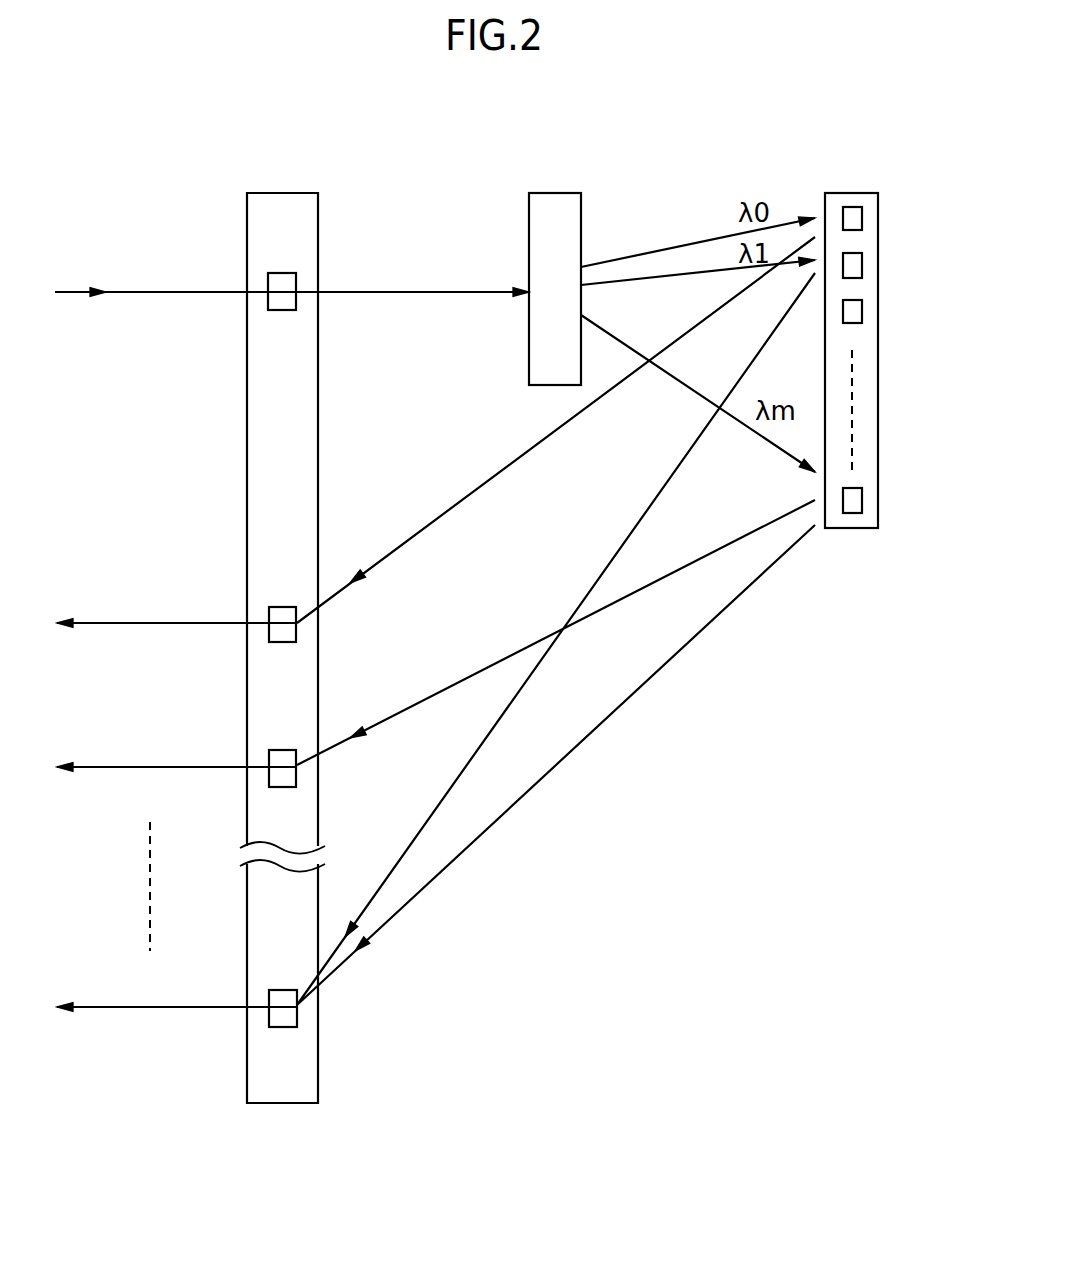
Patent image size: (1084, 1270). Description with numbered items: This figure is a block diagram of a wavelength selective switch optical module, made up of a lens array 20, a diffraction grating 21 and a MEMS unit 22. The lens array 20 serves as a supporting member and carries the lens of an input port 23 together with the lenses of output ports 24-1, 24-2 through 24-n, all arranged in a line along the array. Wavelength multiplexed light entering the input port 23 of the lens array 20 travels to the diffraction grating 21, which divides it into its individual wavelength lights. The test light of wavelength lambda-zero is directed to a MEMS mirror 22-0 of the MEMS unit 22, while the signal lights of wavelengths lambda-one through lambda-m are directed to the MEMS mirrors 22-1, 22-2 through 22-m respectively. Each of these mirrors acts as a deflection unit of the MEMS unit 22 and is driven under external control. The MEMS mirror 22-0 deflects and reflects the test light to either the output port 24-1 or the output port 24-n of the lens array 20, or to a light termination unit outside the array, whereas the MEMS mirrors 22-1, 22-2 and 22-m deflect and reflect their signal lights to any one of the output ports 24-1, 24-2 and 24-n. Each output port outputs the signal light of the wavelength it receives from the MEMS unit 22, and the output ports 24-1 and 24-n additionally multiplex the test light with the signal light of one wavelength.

The lens array 20 is at (298, 193).
The diffraction grating 21 is at (562, 193).
The MEMS unit 22 is at (858, 193).
The input port 23 is at (282, 273).
The MEMS mirror 22-0 is at (862, 218).
The MEMS mirror 22-1 is at (862, 265).
The MEMS mirror 22-2 is at (862, 312).
The MEMS mirror 22-m is at (862, 500).
The output port 24-1 is at (296, 634).
The output port 24-2 is at (296, 777).
The output port 24-n is at (297, 1017).